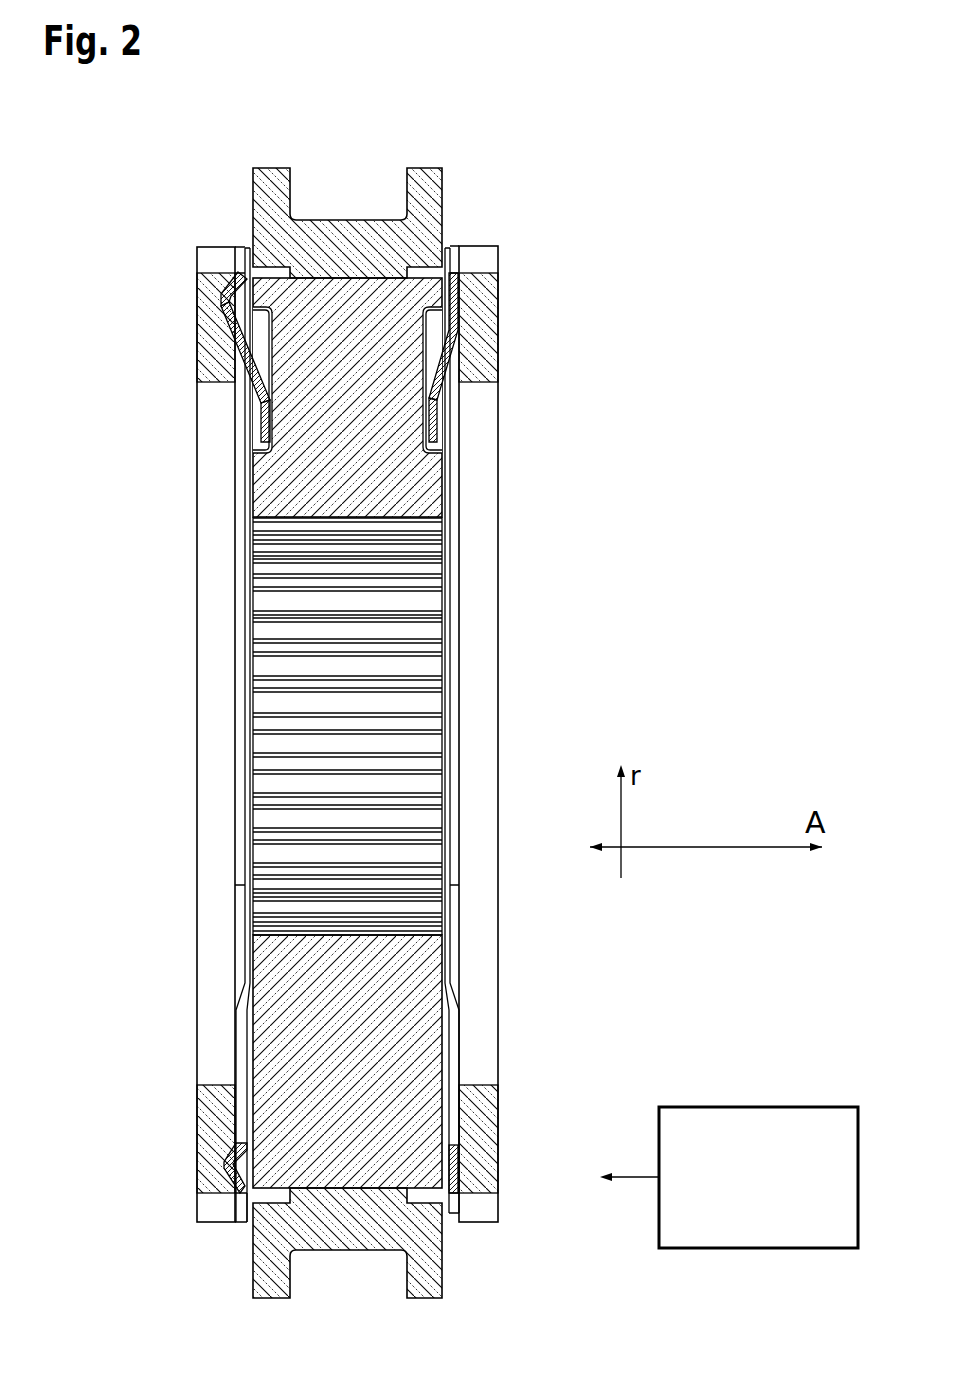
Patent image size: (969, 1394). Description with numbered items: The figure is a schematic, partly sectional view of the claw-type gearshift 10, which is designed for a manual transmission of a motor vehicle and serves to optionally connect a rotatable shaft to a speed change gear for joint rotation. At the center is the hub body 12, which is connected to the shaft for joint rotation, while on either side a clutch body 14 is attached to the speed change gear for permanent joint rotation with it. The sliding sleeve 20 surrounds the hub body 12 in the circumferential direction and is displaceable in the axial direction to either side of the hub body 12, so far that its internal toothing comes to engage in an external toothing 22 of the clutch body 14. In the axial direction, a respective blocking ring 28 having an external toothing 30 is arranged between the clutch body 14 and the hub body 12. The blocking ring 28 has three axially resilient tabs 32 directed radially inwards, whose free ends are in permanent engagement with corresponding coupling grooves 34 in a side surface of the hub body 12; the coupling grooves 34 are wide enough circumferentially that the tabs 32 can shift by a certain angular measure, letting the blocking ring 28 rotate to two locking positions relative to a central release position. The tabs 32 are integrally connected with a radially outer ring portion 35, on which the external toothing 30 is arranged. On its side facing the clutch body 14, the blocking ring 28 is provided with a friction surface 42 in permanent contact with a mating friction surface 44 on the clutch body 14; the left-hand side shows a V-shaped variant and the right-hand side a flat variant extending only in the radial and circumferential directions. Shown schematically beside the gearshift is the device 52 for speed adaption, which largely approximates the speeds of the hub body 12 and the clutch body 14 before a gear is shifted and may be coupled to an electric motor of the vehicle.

The claw-type gearshift 10 is at (123, 207).
The hub body 12 is at (317, 470).
The clutch body 14 is at (212, 333).
The sliding sleeve 20 is at (420, 183).
The external toothing of the clutch body 22 is at (486, 258).
The blocking ring 28 is at (228, 290).
The external toothing of the blocking ring 30 is at (242, 255).
The axially resilient tabs 32 is at (258, 393).
The coupling grooves 34 is at (262, 440).
The ring portion 35 is at (220, 1172).
The friction surface 42 is at (233, 289).
The mating friction surface 44 is at (353, 355).
The device for speed adaption 52 is at (740, 1107).